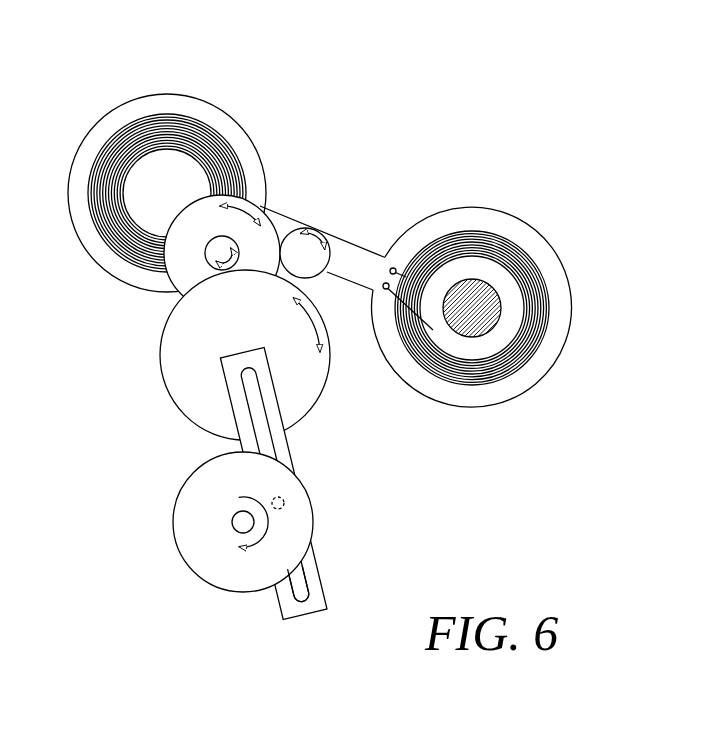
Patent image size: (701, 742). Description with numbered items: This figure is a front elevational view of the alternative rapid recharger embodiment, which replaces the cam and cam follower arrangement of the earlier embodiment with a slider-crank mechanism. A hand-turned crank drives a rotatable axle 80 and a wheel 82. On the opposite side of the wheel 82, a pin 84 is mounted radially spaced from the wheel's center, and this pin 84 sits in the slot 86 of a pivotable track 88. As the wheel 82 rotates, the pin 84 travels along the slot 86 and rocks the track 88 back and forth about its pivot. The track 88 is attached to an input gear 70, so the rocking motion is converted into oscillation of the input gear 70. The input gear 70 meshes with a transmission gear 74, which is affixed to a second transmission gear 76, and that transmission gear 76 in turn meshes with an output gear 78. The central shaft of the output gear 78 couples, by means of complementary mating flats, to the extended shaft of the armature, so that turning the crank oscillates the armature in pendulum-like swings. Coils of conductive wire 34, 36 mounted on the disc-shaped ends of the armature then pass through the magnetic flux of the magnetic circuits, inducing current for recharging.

The coil of conductive wire 34 is at (210, 147).
The coil of conductive wire 36 is at (537, 383).
The input gear 70 is at (316, 405).
The transmission gear 74 is at (232, 218).
The transmission gear 76 is at (185, 276).
The output gear 78 is at (308, 247).
The rotatable axle 80 is at (233, 512).
The wheel 82 is at (195, 578).
The pin 84 is at (286, 501).
The slot 86 is at (297, 586).
The pivotable track 88 is at (322, 617).